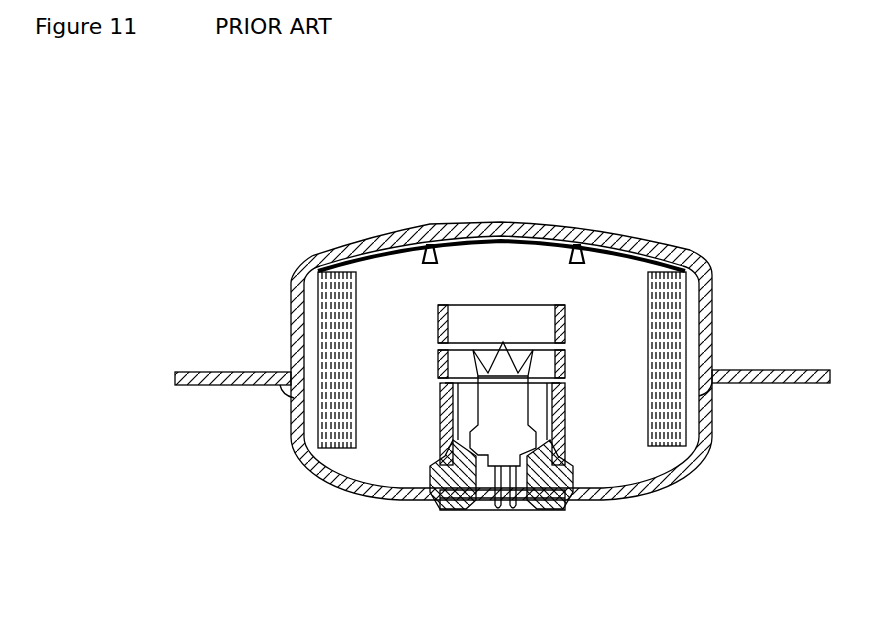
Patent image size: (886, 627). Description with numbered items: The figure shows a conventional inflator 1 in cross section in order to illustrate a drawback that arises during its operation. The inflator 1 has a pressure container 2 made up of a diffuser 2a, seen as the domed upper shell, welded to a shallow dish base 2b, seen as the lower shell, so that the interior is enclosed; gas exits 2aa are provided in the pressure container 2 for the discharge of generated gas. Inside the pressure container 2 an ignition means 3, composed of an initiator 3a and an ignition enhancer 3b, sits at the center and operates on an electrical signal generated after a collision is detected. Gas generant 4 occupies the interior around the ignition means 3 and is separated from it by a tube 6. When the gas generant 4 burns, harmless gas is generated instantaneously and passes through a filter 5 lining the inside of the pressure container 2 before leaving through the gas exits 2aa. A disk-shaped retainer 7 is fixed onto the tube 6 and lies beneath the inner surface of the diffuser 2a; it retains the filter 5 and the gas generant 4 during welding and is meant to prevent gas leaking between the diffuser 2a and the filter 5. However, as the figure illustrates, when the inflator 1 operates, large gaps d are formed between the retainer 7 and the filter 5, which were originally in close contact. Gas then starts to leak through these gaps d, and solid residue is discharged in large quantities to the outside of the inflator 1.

The inflator 1 is at (703, 227).
The pressure container 2 is at (288, 462).
The diffuser 2a is at (308, 270).
The gas exits 2aa is at (290, 332).
The base 2b is at (326, 478).
The ignition means 3 is at (501, 453).
The initiator 3a is at (502, 410).
The ignition enhancer 3b is at (452, 500).
The gas generant 4 is at (602, 383).
The filter 5 is at (662, 442).
The tube 6 is at (440, 468).
The retainer 7 is at (400, 250).
The gaps d is at (350, 264).